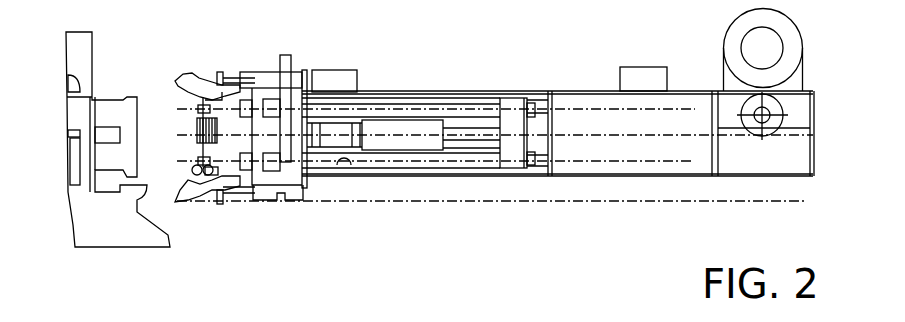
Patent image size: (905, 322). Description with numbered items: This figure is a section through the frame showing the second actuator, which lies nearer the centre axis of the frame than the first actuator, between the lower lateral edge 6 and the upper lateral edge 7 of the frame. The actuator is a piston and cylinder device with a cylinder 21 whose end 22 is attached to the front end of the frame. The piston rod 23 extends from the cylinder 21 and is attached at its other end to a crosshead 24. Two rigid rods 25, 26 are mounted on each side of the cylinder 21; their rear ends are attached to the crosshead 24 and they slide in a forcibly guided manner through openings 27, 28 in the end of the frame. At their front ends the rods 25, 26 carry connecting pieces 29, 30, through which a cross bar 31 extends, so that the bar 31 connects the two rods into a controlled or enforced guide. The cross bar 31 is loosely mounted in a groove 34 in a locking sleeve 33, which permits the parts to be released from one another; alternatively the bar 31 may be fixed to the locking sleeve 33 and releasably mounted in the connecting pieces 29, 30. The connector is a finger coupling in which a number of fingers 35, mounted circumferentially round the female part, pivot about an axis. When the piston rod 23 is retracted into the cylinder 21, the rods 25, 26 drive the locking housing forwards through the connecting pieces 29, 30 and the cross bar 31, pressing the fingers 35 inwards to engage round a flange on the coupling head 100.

The lower lateral edge 6 is at (687, 176).
The upper lateral edge 7 is at (695, 91).
The cylinder 21 is at (428, 120).
The end of the cylinder 22 is at (367, 118).
The piston rod 23 is at (467, 128).
The crosshead 24 is at (518, 99).
The rigid rod 25 is at (409, 100).
The rigid rod 26 is at (392, 165).
The opening 27 is at (341, 108).
The opening 28 is at (350, 167).
The connecting piece 29 is at (302, 102).
The connecting piece 30 is at (307, 170).
The cross bar 31 is at (284, 55).
The locking sleeve 33 is at (248, 63).
The groove 34 is at (268, 66).
The finger 35 is at (192, 77).
The coupling head 100 is at (103, 86).